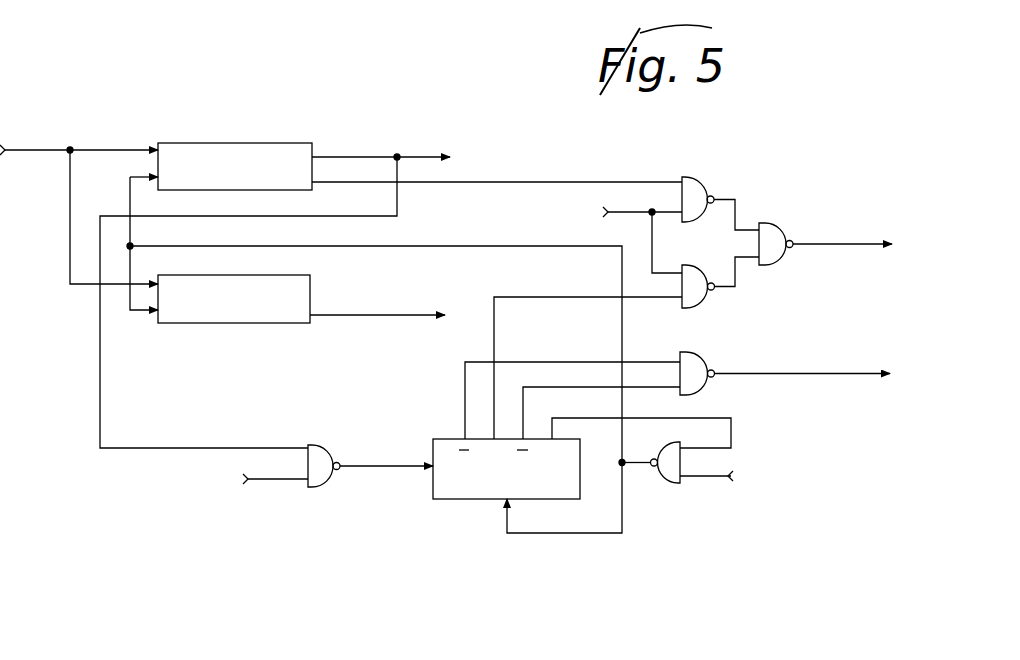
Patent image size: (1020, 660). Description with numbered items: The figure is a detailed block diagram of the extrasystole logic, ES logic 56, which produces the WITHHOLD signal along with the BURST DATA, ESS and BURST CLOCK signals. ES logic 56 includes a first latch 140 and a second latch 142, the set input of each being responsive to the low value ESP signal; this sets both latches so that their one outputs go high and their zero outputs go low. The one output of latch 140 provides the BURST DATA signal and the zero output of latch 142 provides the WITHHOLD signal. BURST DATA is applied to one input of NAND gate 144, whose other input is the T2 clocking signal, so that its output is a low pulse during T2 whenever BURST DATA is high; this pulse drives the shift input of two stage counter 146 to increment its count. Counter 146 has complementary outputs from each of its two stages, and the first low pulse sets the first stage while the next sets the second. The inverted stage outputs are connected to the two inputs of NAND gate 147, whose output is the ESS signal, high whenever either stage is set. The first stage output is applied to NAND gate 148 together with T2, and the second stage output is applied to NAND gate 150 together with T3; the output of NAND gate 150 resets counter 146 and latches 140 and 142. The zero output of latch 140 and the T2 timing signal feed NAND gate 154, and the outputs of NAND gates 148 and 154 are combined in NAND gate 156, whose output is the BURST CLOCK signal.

The ES logic 56 is at (556, 142).
The first latch 140 is at (243, 143).
The second latch 142 is at (230, 324).
The NAND gate 144 is at (320, 489).
The two stage counter 146 is at (455, 500).
The NAND gate 147 is at (692, 356).
The NAND gate 148 is at (704, 308).
The NAND gate 150 is at (672, 485).
The NAND gate 154 is at (706, 178).
The NAND gate 156 is at (770, 222).